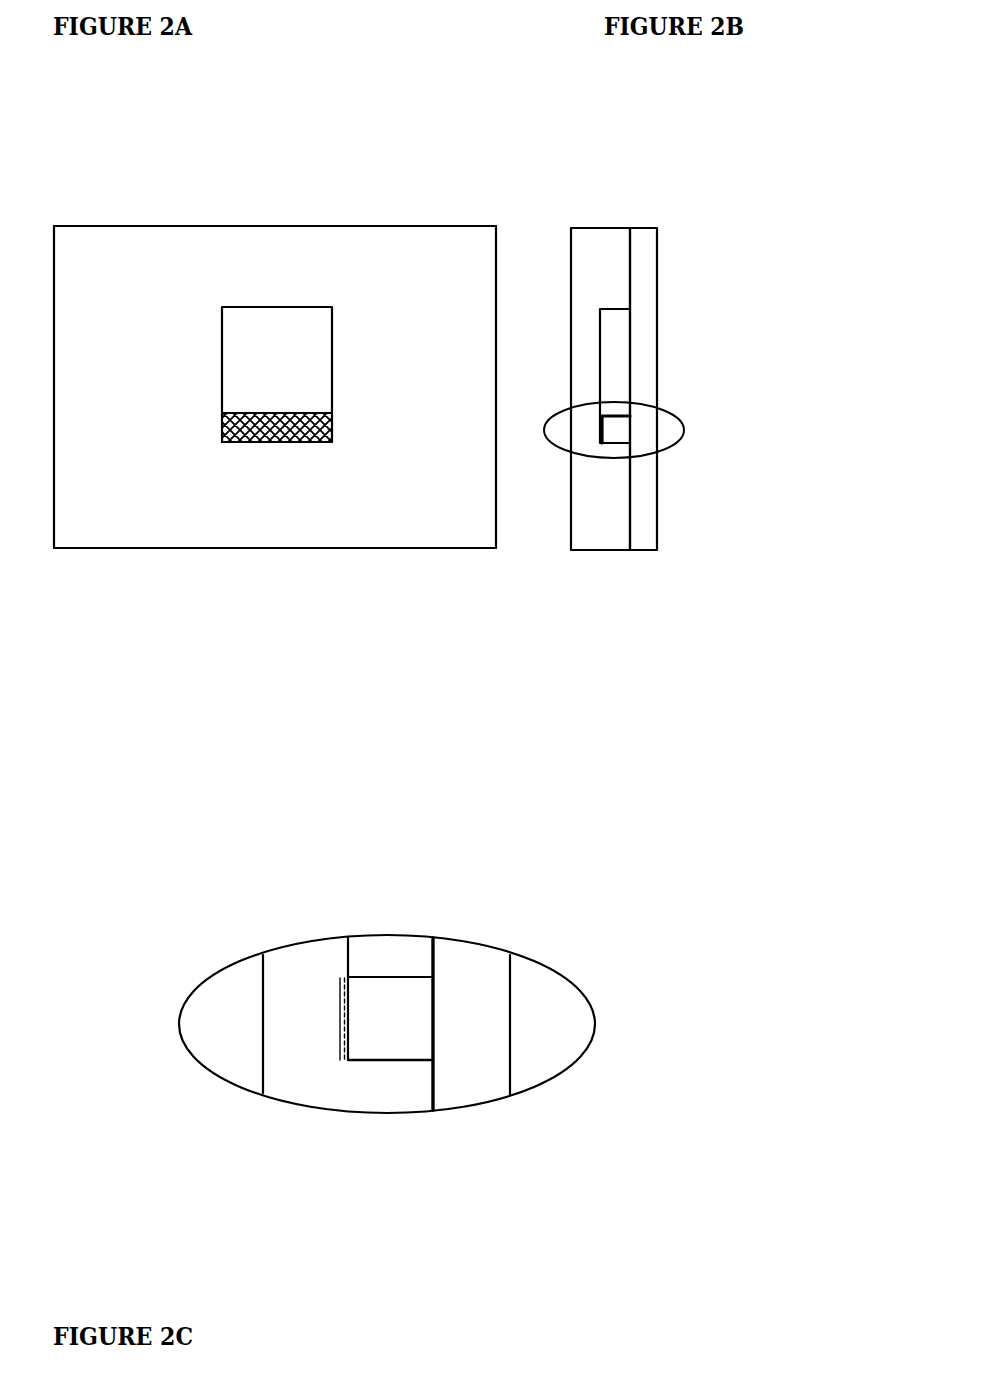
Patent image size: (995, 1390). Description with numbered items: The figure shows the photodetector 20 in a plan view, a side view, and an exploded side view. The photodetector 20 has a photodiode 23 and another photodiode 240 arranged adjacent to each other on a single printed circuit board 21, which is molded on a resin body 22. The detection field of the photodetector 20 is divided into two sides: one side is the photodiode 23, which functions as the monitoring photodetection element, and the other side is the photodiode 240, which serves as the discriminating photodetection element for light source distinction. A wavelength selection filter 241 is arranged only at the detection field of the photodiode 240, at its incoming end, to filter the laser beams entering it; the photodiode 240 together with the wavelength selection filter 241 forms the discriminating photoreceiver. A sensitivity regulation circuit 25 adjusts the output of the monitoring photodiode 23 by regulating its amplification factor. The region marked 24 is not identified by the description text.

In FIG. 2A, the photodetector 20 is at (417, 584).
In FIG. 2A, the printed circuit board 21 is at (405, 228).
In FIG. 2B, the printed circuit board 21 is at (640, 226).
In FIG. 2C, the printed circuit board 21 is at (480, 973).
In FIG. 2B, the resin body 22 is at (584, 226).
In FIG. 2C, the resin body 22 is at (275, 1030).
In FIG. 2A, the photodiode 23 is at (245, 327).
In FIG. 2B, the photodiode 23 is at (616, 343).
In FIG. 2C, the photodiode 23 is at (385, 955).
In FIG. 2A, the sealing portion 24 is at (238, 448).
In FIG. 2B, the sealing portion 24 is at (604, 472).
In FIG. 2C, the sealing portion 24 is at (309, 1073).
In FIG. 2C, the sensitivity regulation circuit 25 is at (437, 993).
In FIG. 2C, the photodiode 240 is at (397, 1062).
In FIG. 2C, the wavelength selection filter 241 is at (340, 1000).